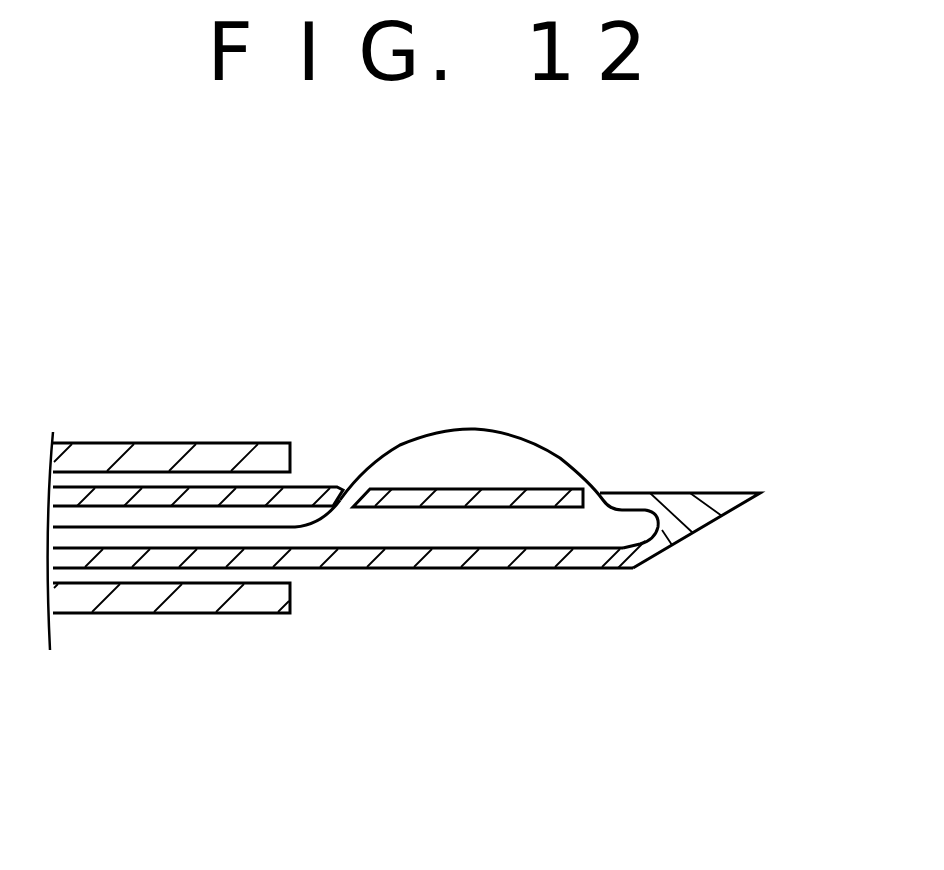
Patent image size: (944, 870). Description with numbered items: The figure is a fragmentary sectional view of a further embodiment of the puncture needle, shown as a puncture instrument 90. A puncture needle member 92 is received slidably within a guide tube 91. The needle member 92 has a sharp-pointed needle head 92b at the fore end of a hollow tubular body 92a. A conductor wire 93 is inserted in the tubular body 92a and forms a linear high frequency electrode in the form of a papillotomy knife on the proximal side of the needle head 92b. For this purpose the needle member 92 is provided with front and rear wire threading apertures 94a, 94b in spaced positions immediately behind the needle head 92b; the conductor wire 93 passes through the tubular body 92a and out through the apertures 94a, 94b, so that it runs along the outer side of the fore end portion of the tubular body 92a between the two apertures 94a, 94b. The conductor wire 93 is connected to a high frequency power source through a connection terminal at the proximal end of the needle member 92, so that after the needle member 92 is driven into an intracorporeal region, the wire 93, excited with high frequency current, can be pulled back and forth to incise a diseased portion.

The puncture instrument 90 is at (337, 449).
The guide tube 91 is at (138, 445).
The puncture needle member 92 is at (240, 568).
The hollow tubular body 92a is at (113, 557).
The sharp-pointed needle head 92b is at (705, 517).
The conductor wire 93 is at (437, 435).
The front wire threading aperture 94a is at (585, 489).
The rear wire threading aperture 94b is at (357, 495).